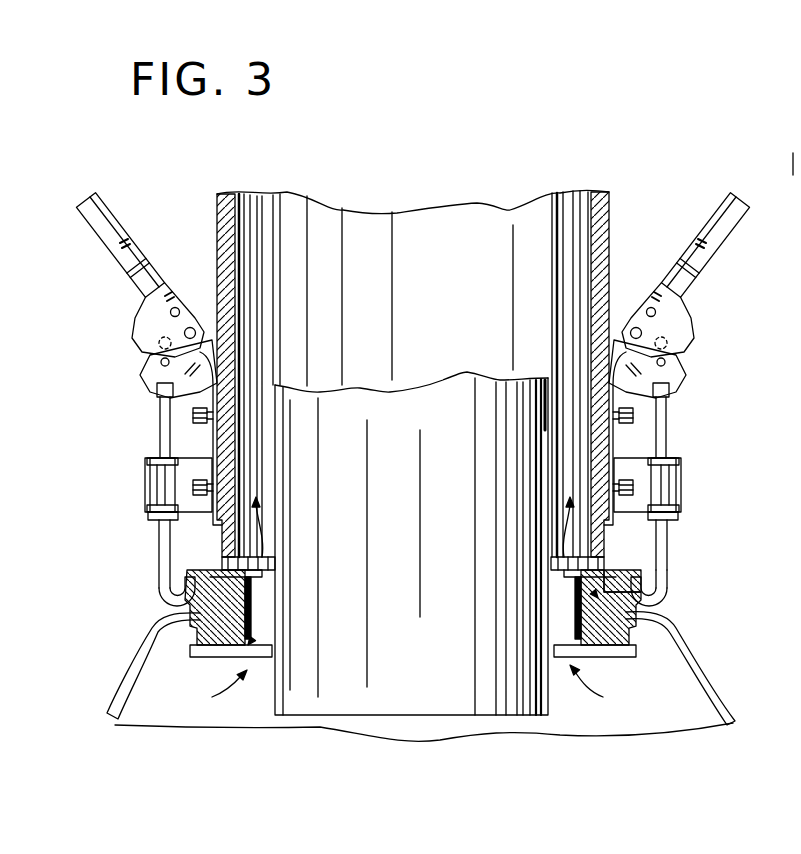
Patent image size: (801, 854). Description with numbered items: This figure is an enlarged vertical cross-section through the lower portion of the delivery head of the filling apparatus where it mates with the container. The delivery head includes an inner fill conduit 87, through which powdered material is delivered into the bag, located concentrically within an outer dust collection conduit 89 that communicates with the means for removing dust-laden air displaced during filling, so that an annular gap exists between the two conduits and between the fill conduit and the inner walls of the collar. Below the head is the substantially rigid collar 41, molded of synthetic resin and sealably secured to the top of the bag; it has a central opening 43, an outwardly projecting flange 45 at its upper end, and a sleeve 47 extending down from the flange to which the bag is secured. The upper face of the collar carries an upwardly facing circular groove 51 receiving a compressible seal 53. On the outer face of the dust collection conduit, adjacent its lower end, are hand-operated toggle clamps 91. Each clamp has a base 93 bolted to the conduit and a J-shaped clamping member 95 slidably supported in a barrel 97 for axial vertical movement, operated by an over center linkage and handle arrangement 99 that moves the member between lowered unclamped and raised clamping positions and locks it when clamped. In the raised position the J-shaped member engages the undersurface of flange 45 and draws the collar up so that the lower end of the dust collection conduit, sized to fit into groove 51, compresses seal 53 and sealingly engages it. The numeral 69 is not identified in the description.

The outer dust collection conduit 89 is at (617, 203).
The inner fill conduit 87 is at (407, 411).
The toggle clamp 91 is at (138, 474).
The over center linkage and handle arrangement 99 is at (673, 325).
The base 93 is at (617, 440).
The J-shaped clamping member 95 is at (670, 450).
The barrel 97 is at (680, 487).
The compressible seal 53 is at (650, 617).
The collar 41 is at (262, 562).
The flange 45 is at (641, 587).
The circular groove 51 is at (630, 578).
The central opening 43 is at (570, 634).
The sleeve 47 is at (193, 633).
The duct 69 is at (788, 839).